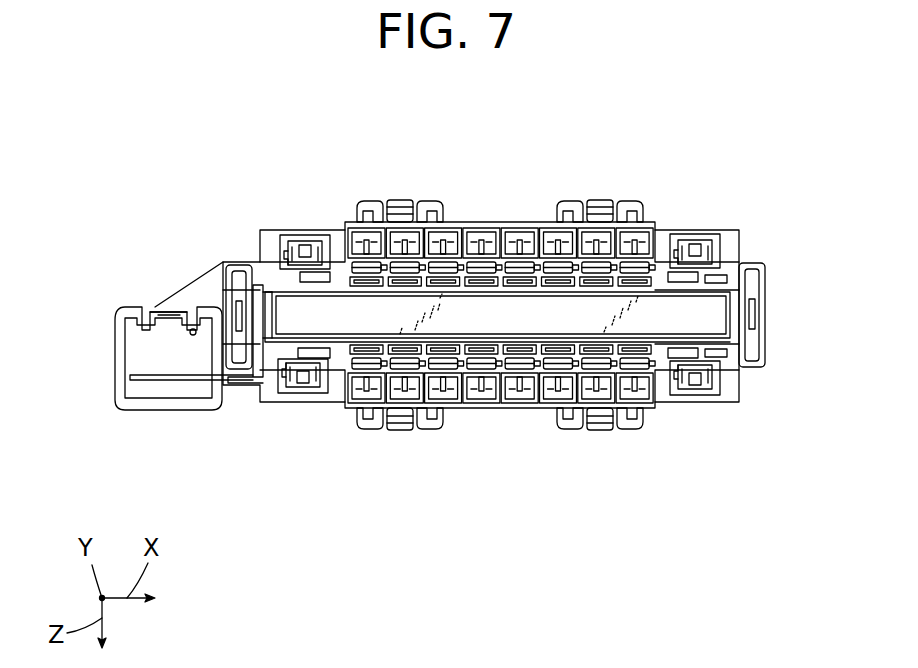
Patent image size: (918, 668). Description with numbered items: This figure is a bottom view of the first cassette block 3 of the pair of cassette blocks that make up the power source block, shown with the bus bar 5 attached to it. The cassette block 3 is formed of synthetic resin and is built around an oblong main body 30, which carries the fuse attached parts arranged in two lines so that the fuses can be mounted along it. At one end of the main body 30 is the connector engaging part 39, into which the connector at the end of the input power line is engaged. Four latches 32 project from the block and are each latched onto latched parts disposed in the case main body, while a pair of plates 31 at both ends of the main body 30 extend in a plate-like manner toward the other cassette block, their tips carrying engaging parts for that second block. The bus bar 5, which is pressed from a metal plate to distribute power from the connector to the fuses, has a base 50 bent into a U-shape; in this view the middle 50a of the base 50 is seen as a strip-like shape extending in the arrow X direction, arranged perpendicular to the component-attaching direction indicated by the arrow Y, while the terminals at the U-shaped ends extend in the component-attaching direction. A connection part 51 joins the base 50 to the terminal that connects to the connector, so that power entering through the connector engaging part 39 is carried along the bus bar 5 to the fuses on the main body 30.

The cassette block 3 is at (717, 216).
The bus bar 5 is at (359, 340).
The main body 30 is at (533, 408).
The plates 31 is at (233, 262).
The latches 32 is at (400, 197).
The connector engaging part 39 is at (167, 420).
The base 50 is at (275, 382).
The middle of the base 50a is at (333, 307).
The connection part 51 is at (230, 400).